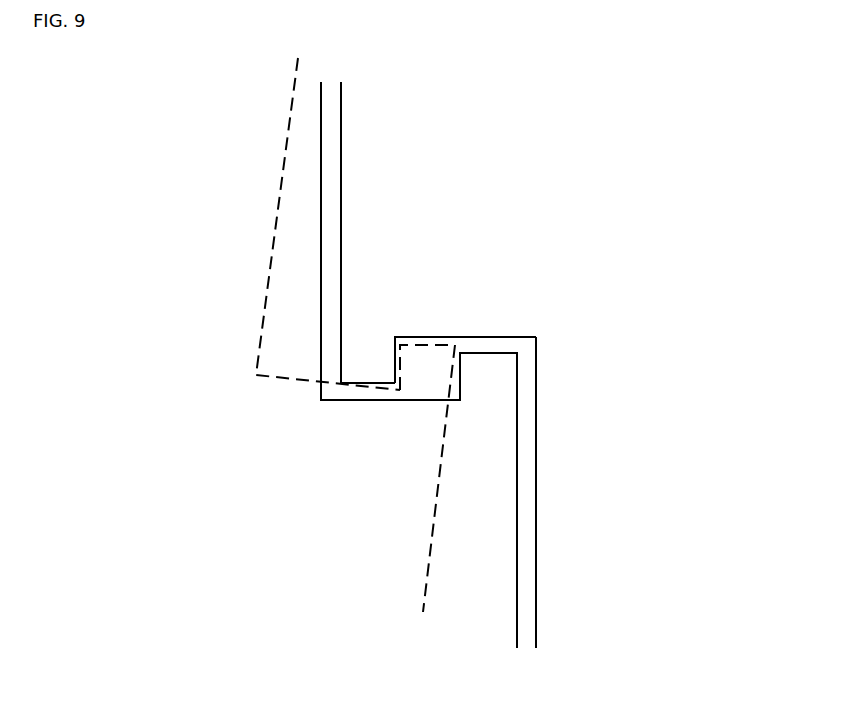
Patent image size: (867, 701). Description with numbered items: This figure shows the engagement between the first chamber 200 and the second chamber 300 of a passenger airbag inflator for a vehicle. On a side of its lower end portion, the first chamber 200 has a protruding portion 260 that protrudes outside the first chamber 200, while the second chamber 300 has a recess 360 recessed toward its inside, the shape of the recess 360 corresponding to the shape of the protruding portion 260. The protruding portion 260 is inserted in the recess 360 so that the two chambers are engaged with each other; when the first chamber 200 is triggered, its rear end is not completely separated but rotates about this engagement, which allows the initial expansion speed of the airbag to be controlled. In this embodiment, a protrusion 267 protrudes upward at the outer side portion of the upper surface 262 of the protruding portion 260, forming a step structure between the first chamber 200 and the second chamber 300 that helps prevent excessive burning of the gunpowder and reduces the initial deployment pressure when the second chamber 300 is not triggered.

The first chamber 200 is at (321, 242).
The protruding portion 260 is at (468, 470).
The upper surface 262 is at (420, 400).
The protrusion 267 is at (495, 370).
The second chamber 300 is at (343, 178).
The recess 360 is at (583, 425).